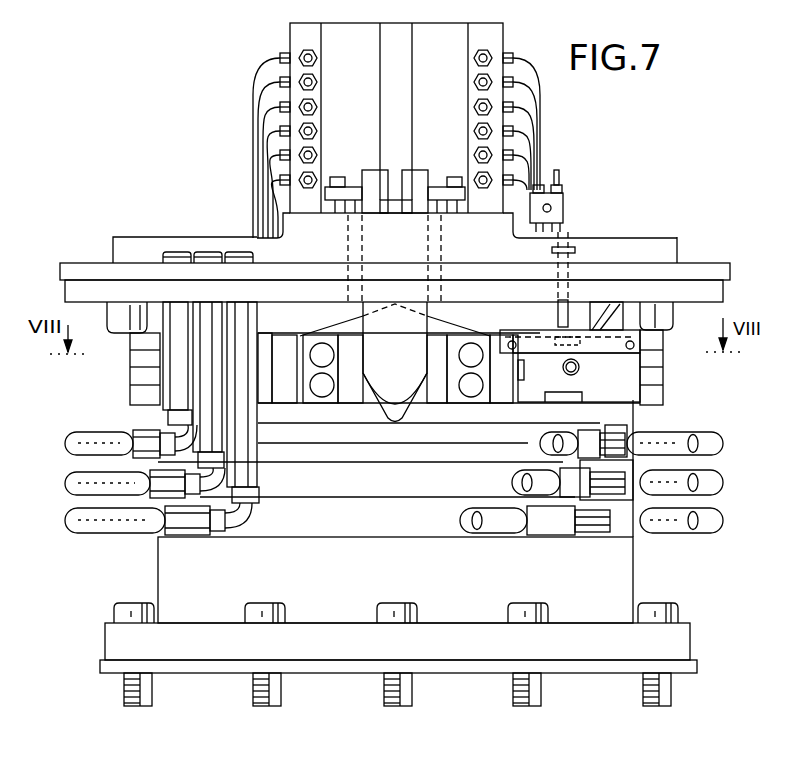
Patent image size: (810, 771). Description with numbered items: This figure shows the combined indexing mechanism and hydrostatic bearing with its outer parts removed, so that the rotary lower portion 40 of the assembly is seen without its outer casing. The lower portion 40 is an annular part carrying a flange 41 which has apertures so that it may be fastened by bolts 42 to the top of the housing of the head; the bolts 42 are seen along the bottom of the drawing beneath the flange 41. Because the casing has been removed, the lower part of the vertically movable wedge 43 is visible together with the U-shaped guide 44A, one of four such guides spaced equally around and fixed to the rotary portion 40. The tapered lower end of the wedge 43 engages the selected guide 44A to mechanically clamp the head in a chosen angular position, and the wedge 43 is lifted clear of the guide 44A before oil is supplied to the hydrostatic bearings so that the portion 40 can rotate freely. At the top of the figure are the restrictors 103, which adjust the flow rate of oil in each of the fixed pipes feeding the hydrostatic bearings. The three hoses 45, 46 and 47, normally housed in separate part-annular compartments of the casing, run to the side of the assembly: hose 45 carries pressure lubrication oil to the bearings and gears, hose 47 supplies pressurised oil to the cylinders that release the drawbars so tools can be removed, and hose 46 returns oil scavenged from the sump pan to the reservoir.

The restrictors 103 is at (317, 180).
The wedge 43 is at (410, 325).
The U-shaped guide 44A is at (435, 393).
The hose 47 is at (95, 435).
The hose 46 is at (75, 481).
The hose 45 is at (75, 526).
The lower portion 40 is at (615, 567).
The flange 41 is at (665, 637).
The bolts 42 is at (384, 690).